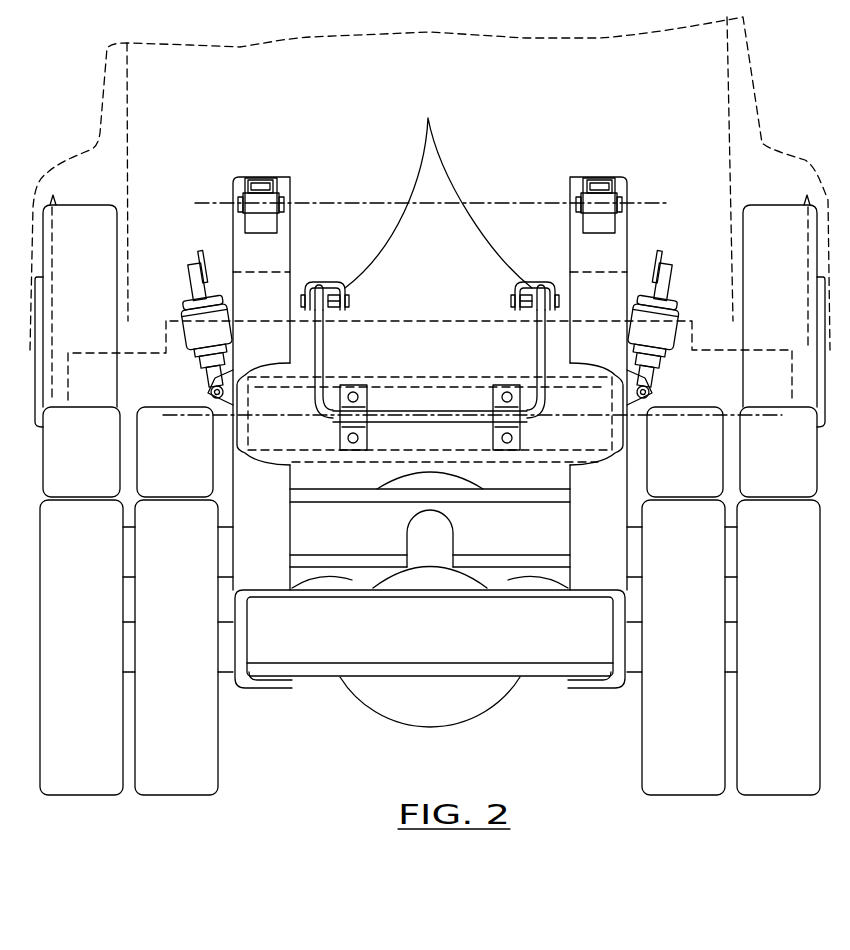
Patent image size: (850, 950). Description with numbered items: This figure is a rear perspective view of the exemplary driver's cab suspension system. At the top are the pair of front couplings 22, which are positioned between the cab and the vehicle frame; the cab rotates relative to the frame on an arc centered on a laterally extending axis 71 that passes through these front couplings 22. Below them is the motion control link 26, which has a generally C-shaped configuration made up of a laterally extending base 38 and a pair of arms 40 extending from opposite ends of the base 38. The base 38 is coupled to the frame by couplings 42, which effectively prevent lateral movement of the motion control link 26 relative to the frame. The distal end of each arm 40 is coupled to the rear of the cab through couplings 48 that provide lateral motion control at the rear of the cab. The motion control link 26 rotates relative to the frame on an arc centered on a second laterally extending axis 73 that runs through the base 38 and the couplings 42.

The front couplings 22 is at (240, 188).
The motion control link 26 is at (340, 343).
The base 38 is at (438, 408).
The arms 40 is at (532, 350).
The couplings 42 is at (352, 456).
The couplings 48 is at (430, 208).
The laterally extending axis 71 is at (215, 203).
The laterally extending axis 73 is at (173, 413).